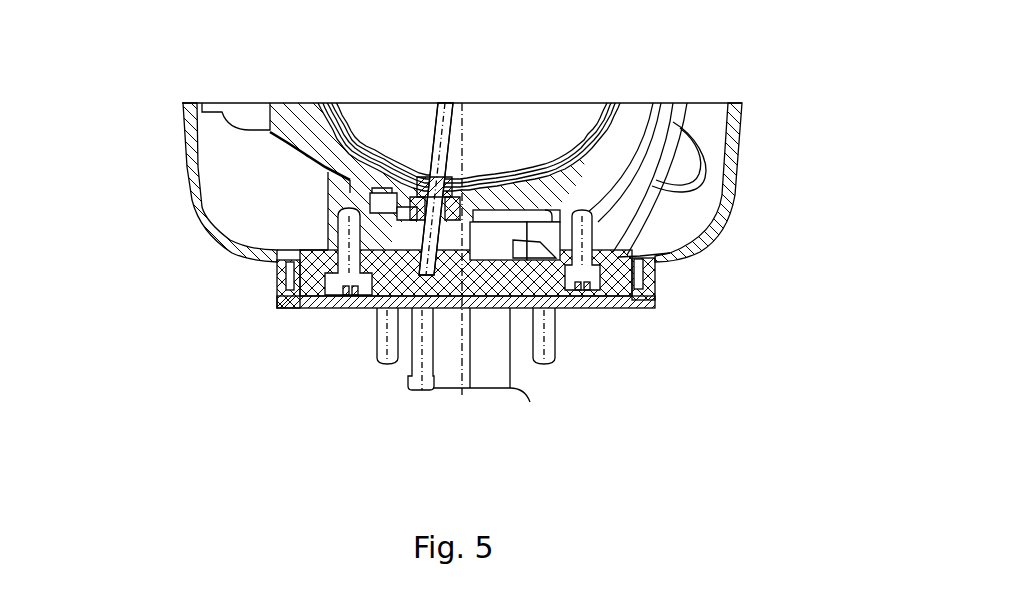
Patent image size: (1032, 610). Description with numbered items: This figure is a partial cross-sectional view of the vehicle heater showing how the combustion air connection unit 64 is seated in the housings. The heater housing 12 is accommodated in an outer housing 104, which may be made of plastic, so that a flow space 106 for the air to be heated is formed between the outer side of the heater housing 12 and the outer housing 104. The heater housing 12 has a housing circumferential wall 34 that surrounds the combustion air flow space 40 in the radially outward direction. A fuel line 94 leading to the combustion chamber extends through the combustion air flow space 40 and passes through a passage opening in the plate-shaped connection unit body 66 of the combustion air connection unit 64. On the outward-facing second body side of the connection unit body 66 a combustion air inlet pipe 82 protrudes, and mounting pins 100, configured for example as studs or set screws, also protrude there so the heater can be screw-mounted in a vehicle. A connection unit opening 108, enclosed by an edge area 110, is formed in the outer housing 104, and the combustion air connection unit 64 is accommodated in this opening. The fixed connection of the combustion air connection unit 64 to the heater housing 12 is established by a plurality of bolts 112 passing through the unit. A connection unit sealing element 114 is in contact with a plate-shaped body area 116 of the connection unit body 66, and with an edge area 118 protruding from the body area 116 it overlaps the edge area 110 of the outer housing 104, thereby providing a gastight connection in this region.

The heater housing 12 is at (680, 98).
The housing circumferential wall 34 is at (675, 142).
The combustion air flow space 40 is at (378, 117).
The combustion air connection unit 64 is at (312, 308).
The connection unit body 66 is at (498, 280).
The combustion air inlet pipe 82 is at (520, 390).
The fuel line 94 is at (452, 113).
The mounting pins 100 is at (400, 362).
The outer housing 104 is at (183, 172).
The flow space 106 is at (213, 140).
The connection unit opening 108 is at (615, 258).
The edge area 110 is at (645, 275).
The bolts 112 is at (335, 245).
The connection unit sealing element 114 is at (340, 308).
The plate-shaped body area 116 is at (595, 298).
The edge area 118 is at (277, 285).